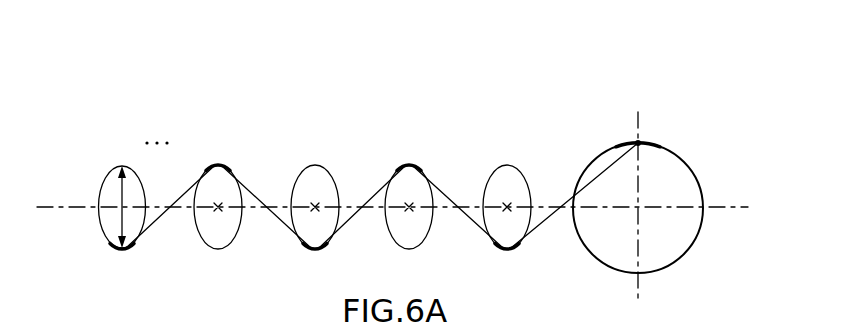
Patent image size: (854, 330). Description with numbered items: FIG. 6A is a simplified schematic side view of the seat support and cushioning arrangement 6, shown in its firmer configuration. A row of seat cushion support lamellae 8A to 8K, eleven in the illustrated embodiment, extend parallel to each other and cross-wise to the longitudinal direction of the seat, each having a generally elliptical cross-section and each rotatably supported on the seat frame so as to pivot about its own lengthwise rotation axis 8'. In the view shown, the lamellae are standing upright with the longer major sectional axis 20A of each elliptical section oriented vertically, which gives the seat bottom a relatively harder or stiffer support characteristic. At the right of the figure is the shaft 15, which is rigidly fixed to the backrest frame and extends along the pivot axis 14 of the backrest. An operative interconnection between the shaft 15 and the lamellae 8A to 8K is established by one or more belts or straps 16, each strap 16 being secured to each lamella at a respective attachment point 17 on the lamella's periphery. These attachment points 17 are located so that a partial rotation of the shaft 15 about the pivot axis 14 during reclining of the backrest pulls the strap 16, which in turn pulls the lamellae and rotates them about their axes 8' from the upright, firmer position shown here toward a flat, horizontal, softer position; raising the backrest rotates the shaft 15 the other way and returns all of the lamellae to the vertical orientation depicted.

The seat support and cushioning arrangement 6 is at (78, 72).
The seat cushion support lamella 8A is at (122, 165).
The longitudinal rotation axis of lamella 8' is at (229, 219).
The seat cushion support lamella 8K is at (515, 180).
The pivot axis of backrest 14 is at (640, 212).
The shaft 15 is at (665, 176).
The belt or strap 16 is at (626, 138).
The attachment point 17 is at (128, 249).
The major sectional axis 20A is at (121, 213).